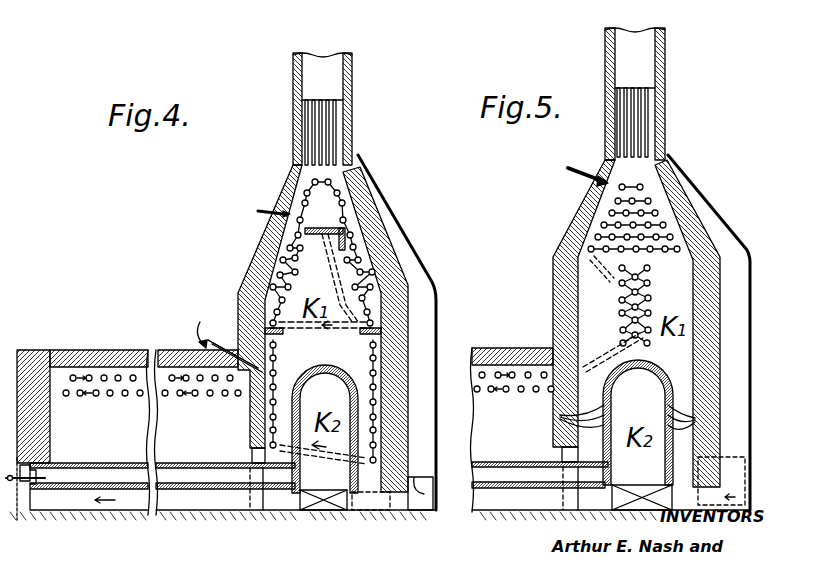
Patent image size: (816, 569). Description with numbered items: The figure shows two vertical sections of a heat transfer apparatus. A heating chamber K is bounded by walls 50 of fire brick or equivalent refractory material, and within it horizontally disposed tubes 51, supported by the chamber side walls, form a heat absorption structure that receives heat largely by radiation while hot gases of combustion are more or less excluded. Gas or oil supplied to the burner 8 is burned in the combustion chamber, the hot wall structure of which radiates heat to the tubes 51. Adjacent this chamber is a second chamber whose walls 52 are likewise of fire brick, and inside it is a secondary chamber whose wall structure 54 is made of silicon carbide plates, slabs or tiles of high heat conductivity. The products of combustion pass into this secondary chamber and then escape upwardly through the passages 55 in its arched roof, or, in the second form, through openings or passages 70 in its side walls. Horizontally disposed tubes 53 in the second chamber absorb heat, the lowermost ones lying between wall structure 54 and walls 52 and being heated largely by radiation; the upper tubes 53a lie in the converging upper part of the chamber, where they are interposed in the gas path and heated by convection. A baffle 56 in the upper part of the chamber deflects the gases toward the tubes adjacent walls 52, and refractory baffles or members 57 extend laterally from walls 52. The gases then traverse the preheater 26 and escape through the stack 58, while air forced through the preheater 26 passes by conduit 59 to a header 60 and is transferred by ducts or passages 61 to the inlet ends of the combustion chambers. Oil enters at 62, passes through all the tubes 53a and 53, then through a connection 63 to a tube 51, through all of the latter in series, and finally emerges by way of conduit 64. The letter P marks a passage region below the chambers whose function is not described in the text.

In FIG. 4, the stack 58 is at (332, 79).
In FIG. 5, the stack 58 is at (648, 58).
In FIG. 4, the preheater 26 is at (334, 134).
In FIG. 5, the preheater 26 is at (648, 122).
In FIG. 4, the baffle 56 is at (330, 223).
In FIG. 4, the upper tubes 53a is at (262, 240).
In FIG. 5, the upper tubes 53a is at (657, 213).
In FIG. 4, the oil inlet 62 is at (268, 208).
In FIG. 5, the oil inlet 62 is at (582, 186).
In FIG. 4, the conduit 59 is at (396, 237).
In FIG. 5, the conduit 59 is at (736, 492).
In FIG. 4, the wall structure of chamber K1 52 is at (248, 270).
In FIG. 5, the wall structure of chamber K1 52 is at (556, 268).
In FIG. 4, the baffles or members 57 is at (240, 302).
In FIG. 4, the tubes 53 is at (276, 400).
In FIG. 5, the tubes 53 is at (626, 302).
In FIG. 4, the conduit 64 is at (196, 327).
In FIG. 4, the connection 63 is at (247, 350).
In FIG. 4, the walls of chamber K 50 is at (30, 352).
In FIG. 5, the walls of chamber K 50 is at (527, 352).
In FIG. 4, the tubes 51 is at (140, 390).
In FIG. 5, the tubes 51 is at (506, 392).
In FIG. 4, the wall structure of chamber K2 54 is at (252, 428).
In FIG. 5, the wall structure of chamber K2 54 is at (603, 448).
In FIG. 4, the passages 55 is at (340, 369).
In FIG. 4, the burner 8 is at (21, 515).
In FIG. 4, the header 60 is at (323, 512).
In FIG. 5, the header 60 is at (628, 421).
In FIG. 4, the ducts or passages 61 is at (231, 512).
In FIG. 5, the ducts or passages 61 is at (536, 514).
In FIG. 5, the openings or passages 70 is at (755, 412).
In FIG. 4, the heating chamber K is at (115, 431).
In FIG. 5, the heating chamber K is at (513, 431).
In FIG. 4, the passage P is at (195, 538).
In FIG. 5, the passage P is at (506, 528).